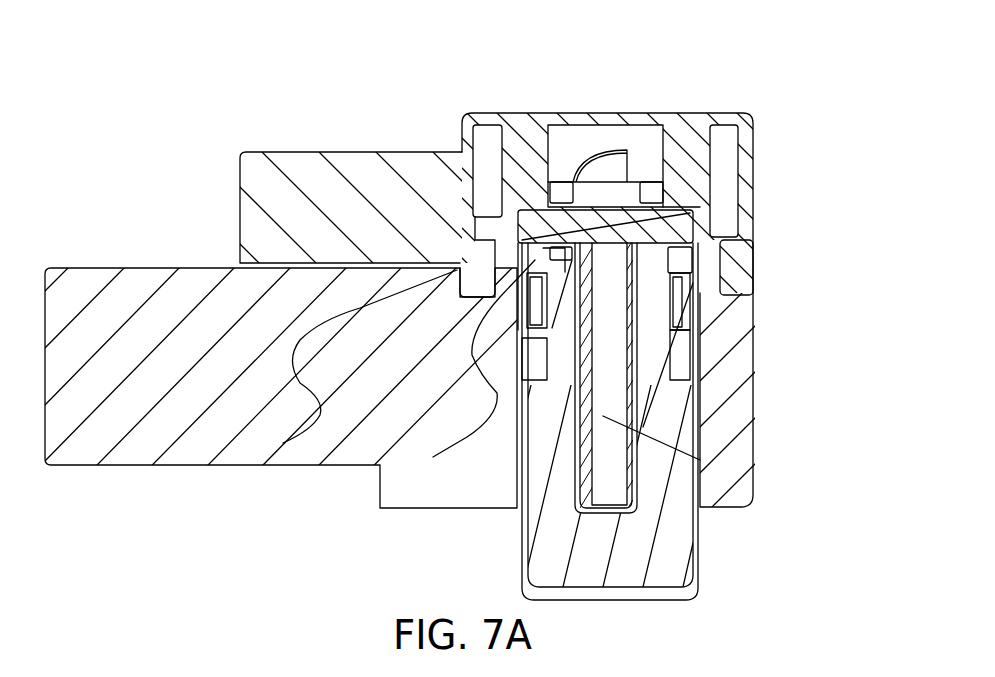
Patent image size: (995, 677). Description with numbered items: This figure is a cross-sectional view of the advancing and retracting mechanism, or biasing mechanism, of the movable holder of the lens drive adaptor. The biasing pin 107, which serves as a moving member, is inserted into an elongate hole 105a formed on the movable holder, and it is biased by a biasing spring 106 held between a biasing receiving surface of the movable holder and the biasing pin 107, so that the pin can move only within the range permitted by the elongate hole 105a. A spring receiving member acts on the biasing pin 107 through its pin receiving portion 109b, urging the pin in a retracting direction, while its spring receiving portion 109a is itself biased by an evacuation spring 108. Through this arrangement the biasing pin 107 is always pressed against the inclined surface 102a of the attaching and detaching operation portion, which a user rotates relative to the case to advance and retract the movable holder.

The inclined surface 102a is at (703, 212).
The elongate hole 105a is at (528, 217).
The biasing spring 106 is at (708, 507).
The biasing pin 107 is at (547, 203).
The evacuation spring 108 is at (752, 442).
The spring receiving portion 109a is at (700, 290).
The pin receiving portion 109b is at (283, 443).